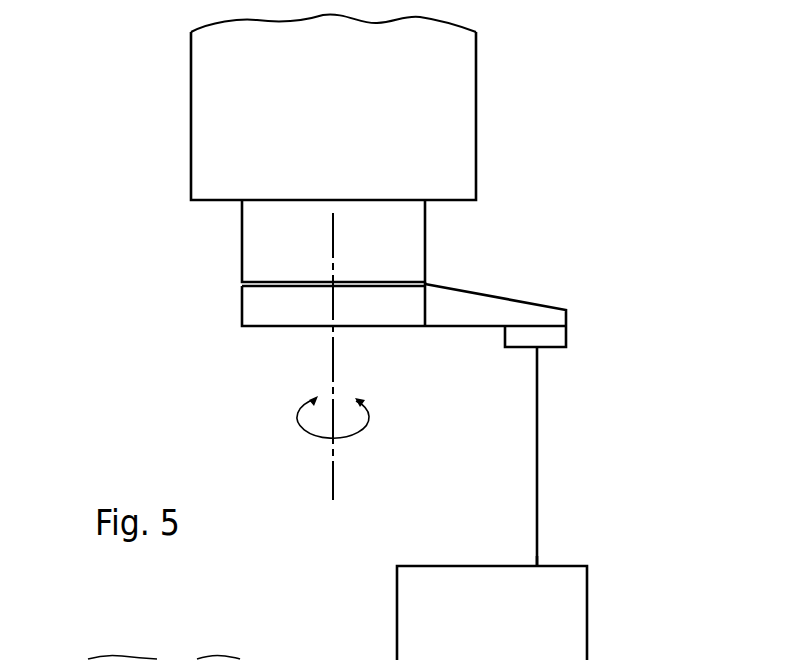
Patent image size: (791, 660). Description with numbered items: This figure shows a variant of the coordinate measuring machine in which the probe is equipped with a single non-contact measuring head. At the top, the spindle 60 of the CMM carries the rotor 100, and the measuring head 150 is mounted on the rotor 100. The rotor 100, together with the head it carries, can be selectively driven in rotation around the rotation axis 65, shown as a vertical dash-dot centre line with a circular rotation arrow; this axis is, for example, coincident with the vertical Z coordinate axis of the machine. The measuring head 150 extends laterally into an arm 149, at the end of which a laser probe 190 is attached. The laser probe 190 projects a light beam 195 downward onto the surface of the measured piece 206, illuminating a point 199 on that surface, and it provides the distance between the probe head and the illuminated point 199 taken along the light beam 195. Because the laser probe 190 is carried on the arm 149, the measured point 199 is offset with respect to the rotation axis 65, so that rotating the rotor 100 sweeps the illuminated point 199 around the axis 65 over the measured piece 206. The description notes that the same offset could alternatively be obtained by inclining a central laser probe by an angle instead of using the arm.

The spindle 60 is at (207, 151).
The rotor 100 is at (262, 252).
The measuring head 150 is at (272, 308).
The arm 149 is at (523, 317).
The laser probe 190 is at (552, 338).
The light beam 195 is at (540, 417).
The illuminated point 199 is at (539, 565).
The measured piece 206 is at (571, 628).
The rotation axis 65 is at (333, 480).